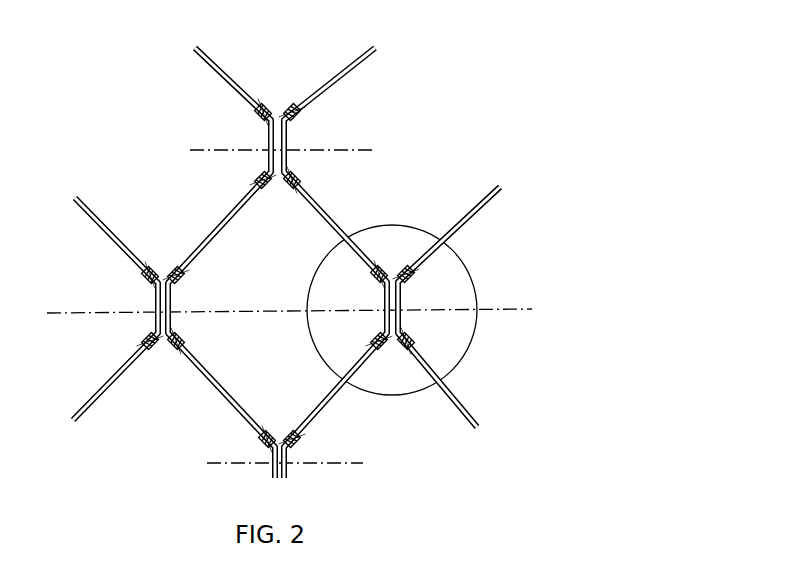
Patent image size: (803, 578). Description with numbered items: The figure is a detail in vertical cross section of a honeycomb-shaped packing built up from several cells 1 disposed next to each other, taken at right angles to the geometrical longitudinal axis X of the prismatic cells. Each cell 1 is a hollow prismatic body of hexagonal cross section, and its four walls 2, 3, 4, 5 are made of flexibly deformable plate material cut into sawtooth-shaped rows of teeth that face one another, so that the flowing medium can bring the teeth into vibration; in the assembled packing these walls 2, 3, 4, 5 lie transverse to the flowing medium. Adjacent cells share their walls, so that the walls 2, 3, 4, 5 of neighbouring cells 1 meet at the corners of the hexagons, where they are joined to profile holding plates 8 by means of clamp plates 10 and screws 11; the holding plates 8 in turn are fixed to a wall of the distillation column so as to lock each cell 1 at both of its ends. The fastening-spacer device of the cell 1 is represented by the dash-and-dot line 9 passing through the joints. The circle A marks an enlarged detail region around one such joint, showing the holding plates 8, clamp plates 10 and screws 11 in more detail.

The cell 1 is at (291, 46).
The cell wall 2 is at (334, 222).
The cell wall 3 is at (325, 400).
The cell wall 4 is at (224, 397).
The cell wall 5 is at (214, 228).
The holding plate 8 is at (290, 152).
The fastening-spacer device 9 is at (372, 150).
The clamp plate 10 is at (301, 115).
The screw 11 is at (291, 106).
The detail circle A is at (463, 360).
The geometrical longitudinal axis X is at (264, 312).